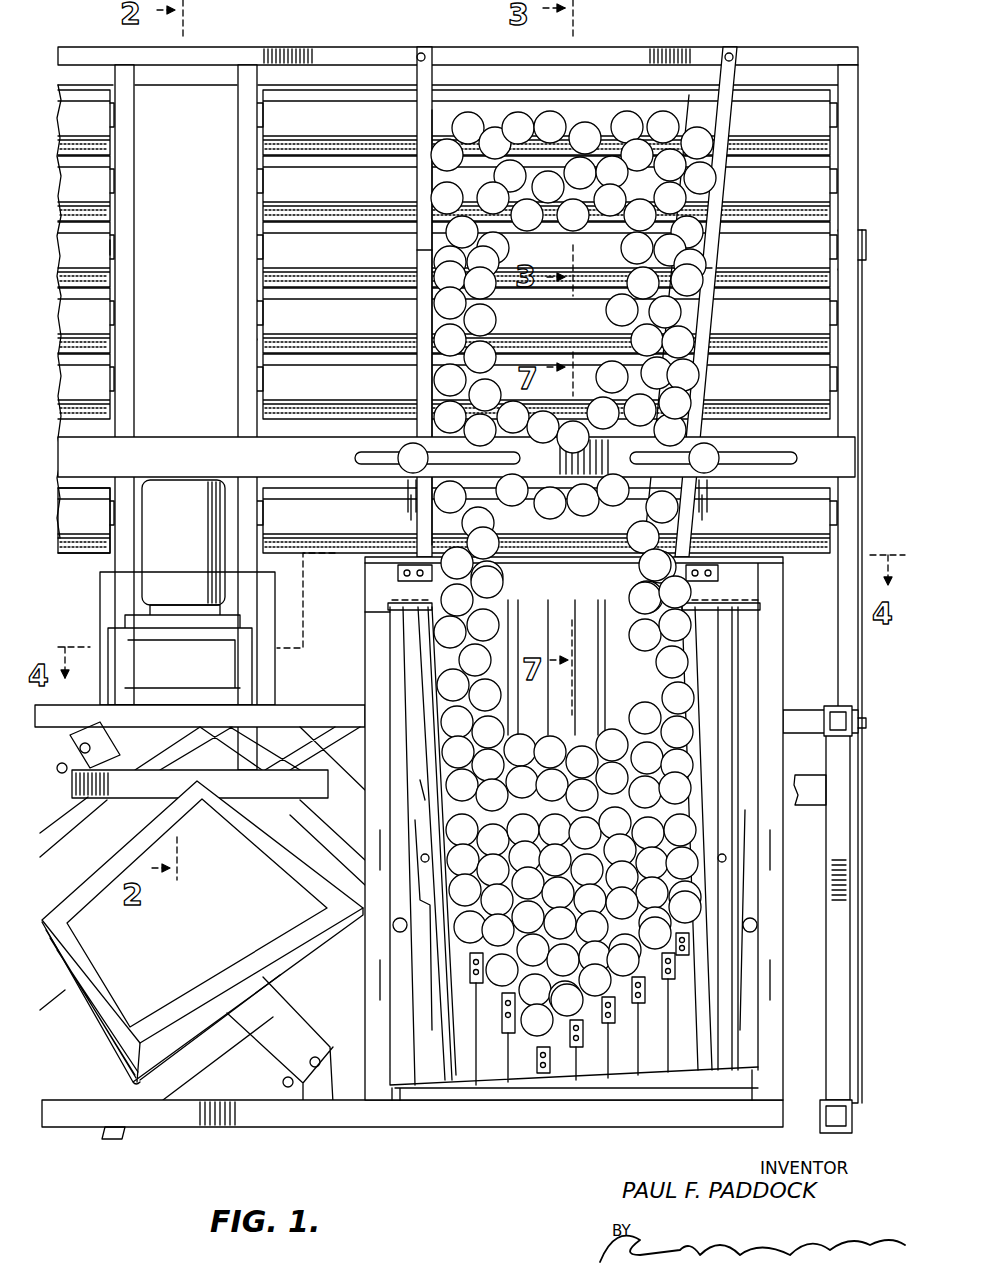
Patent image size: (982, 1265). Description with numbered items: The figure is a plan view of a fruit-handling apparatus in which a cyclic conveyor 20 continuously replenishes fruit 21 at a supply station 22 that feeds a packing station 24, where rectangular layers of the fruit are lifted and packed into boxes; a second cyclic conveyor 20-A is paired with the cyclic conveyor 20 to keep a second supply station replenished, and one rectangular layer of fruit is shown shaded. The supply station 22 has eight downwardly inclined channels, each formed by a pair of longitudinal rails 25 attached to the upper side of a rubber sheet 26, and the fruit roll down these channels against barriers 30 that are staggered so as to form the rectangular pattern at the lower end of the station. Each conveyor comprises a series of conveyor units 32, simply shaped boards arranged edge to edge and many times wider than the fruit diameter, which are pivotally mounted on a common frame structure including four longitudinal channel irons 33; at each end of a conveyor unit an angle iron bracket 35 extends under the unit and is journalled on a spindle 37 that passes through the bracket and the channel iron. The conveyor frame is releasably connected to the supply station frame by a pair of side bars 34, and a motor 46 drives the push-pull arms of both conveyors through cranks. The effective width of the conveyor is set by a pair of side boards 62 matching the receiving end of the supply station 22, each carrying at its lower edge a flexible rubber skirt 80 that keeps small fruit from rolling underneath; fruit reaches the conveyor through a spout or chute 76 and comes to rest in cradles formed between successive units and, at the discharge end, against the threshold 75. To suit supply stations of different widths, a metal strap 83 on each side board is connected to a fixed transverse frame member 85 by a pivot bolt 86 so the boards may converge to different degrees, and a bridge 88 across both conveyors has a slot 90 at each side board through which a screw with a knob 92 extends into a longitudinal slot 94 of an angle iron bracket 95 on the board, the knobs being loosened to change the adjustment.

The cyclic conveyor 20 is at (350, 567).
The second cyclic conveyor 20-A is at (77, 562).
The fruit 21 is at (518, 112).
The supply station 22 is at (735, 865).
The packing station 24 is at (195, 946).
The longitudinal rails 25 is at (650, 1062).
The rubber sheet 26 is at (513, 1087).
The barriers 30 is at (573, 1047).
The conveyor units 32 is at (85, 247).
The longitudinal channel irons 33 is at (240, 368).
The side bars 34 is at (855, 512).
The angle iron bracket 35 is at (114, 124).
The spindle 37 is at (126, 305).
The motor 46 is at (192, 546).
The side boards 62 is at (417, 250).
The threshold 75 is at (574, 828).
The spout or chute 76 is at (618, 110).
The flexible rubber skirt 80 is at (437, 228).
The metal strap 83 is at (421, 48).
The transverse frame member 85 is at (323, 55).
The pivot bolt 86 is at (421, 55).
The bridge 88 is at (225, 458).
The slot 90 is at (357, 463).
The knob 92 is at (407, 446).
The longitudinal slot 94 is at (406, 496).
The angle iron bracket 95 is at (411, 500).